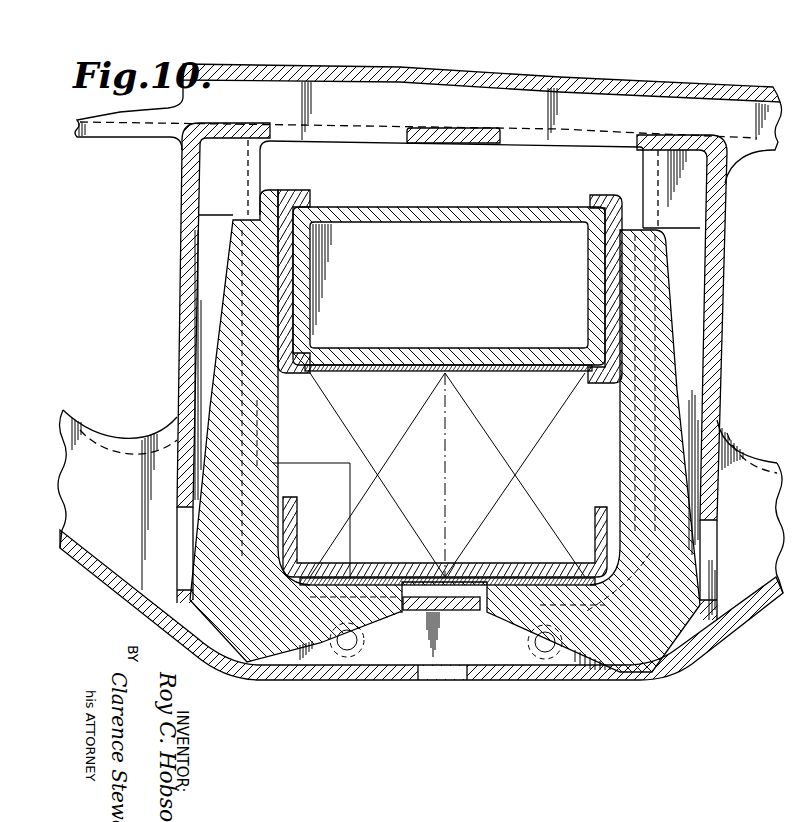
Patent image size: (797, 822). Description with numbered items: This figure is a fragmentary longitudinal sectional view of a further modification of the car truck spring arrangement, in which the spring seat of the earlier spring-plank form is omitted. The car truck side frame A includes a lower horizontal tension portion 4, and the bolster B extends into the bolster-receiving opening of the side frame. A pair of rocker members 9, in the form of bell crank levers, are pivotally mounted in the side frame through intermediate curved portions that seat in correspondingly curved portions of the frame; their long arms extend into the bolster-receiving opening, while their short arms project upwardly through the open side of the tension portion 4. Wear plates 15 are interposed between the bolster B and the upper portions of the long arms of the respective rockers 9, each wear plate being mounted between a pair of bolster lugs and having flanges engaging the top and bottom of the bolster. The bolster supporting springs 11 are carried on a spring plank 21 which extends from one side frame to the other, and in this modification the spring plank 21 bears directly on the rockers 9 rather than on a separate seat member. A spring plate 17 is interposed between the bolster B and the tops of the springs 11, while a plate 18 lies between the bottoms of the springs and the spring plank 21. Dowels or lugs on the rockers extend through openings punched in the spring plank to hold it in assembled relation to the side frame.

The car truck side frame A is at (182, 271).
The bolster B is at (510, 222).
The lower horizontal tension portion 4 is at (500, 681).
The rocker member 9 is at (266, 493).
The bolster supporting spring 11 is at (582, 570).
The wear plate 15 is at (293, 281).
The spring plate 17 is at (412, 369).
The plate 18 is at (417, 564).
The spring plank 21 is at (597, 538).